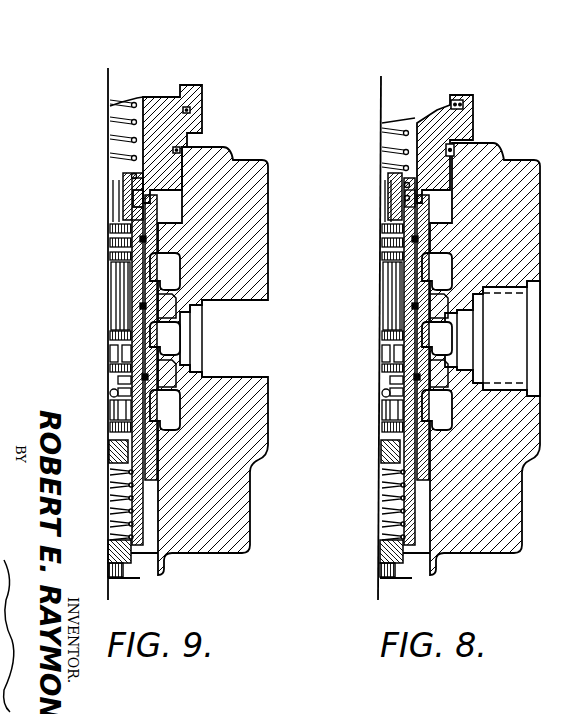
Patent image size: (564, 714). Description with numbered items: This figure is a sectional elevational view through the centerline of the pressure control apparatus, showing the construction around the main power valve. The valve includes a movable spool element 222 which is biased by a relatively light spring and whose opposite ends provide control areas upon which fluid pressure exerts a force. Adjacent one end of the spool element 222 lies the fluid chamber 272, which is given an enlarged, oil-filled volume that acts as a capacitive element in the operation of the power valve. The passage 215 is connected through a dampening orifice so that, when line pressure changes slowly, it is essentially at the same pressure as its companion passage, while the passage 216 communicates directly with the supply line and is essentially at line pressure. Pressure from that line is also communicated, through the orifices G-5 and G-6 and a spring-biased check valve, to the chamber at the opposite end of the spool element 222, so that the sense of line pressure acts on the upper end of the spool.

In FIG. 9, the fluid chamber 272 is at (121, 117).
In FIG. 8, the fluid chamber 272 is at (418, 115).
In FIG. 9, the passage 215 is at (158, 190).
In FIG. 8, the passage 215 is at (483, 151).
In FIG. 9, the movable spool element 222 is at (117, 277).
In FIG. 8, the movable spool element 222 is at (350, 288).
In FIG. 9, the passage 216 is at (146, 400).
In FIG. 8, the passage 216 is at (367, 359).
In FIG. 8, the orifice G-5 is at (354, 401).
In FIG. 9, the orifice G-6 is at (110, 452).
In FIG. 8, the orifice G-6 is at (355, 490).